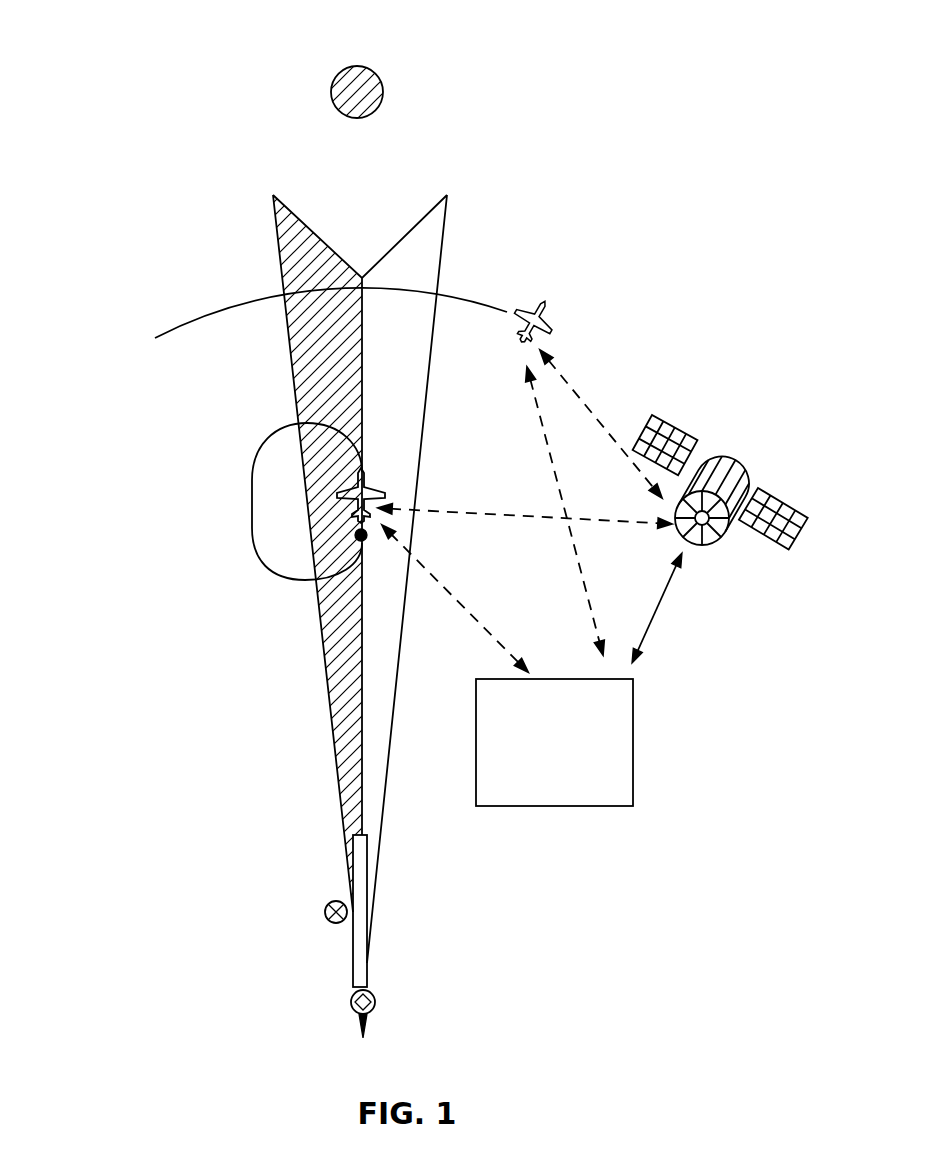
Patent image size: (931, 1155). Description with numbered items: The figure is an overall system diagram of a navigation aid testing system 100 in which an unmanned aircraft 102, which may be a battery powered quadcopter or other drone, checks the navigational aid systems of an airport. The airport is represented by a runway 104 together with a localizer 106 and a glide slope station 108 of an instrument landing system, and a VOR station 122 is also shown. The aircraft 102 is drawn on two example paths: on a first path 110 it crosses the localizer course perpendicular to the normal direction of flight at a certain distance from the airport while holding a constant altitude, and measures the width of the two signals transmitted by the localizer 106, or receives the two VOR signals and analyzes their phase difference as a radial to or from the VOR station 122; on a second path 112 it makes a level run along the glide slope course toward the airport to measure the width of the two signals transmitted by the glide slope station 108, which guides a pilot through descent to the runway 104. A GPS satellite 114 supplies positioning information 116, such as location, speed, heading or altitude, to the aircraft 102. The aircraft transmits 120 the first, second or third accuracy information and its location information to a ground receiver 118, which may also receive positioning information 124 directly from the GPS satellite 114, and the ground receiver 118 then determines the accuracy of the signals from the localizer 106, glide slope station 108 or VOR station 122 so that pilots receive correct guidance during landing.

The navigation aid testing system 100 is at (145, 117).
The unmanned aircraft 102 is at (364, 467).
The runway 104 is at (358, 902).
The localizer 106 is at (375, 1002).
The glide slope station 108 is at (325, 912).
The first path 110 is at (460, 297).
The second path 112 is at (252, 504).
The GPS satellite 114 is at (722, 462).
The positioning information 116 is at (604, 418).
The ground receiver 118 is at (530, 792).
The transmission of information 120 is at (583, 572).
The VOR station 122 is at (366, 68).
The positioning information 124 is at (660, 608).